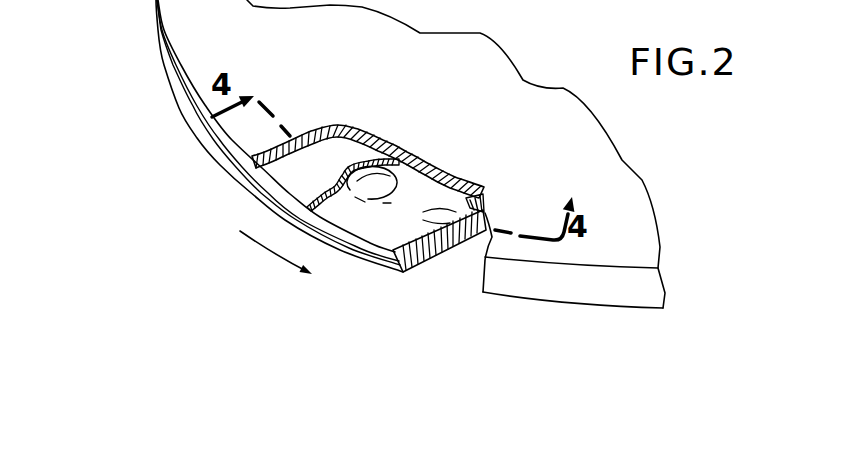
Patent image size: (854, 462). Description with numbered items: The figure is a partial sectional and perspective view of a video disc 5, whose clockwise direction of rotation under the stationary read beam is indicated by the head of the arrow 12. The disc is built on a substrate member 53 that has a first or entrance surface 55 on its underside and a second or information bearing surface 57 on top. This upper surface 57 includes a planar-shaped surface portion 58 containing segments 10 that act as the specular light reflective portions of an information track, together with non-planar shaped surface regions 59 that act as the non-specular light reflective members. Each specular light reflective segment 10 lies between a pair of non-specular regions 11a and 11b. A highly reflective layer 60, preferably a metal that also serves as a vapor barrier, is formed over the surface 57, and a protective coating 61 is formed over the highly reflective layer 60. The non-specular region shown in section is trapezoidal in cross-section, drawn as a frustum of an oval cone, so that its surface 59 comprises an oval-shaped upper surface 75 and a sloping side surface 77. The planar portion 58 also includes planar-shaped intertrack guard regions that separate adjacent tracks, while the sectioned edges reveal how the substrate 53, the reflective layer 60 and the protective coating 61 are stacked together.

The video disc 5 is at (170, 145).
The specular light reflective member 10 is at (413, 200).
The non-specular light reflective region 11a is at (364, 170).
The non-specular light reflective region 11b is at (488, 191).
The arrow 12 is at (240, 231).
The substrate member 53 is at (222, 150).
The first or entrance surface 55 is at (440, 240).
The second or information bearing surface 57 is at (389, 256).
The planar-shaped surface portion 58 is at (378, 233).
The non-planar shaped surface region 59 is at (350, 196).
The highly reflective layer 60 is at (268, 176).
The protective coating 61 is at (233, 153).
The oval-shaped upper surface 75 is at (363, 174).
The side surface 77 is at (366, 193).